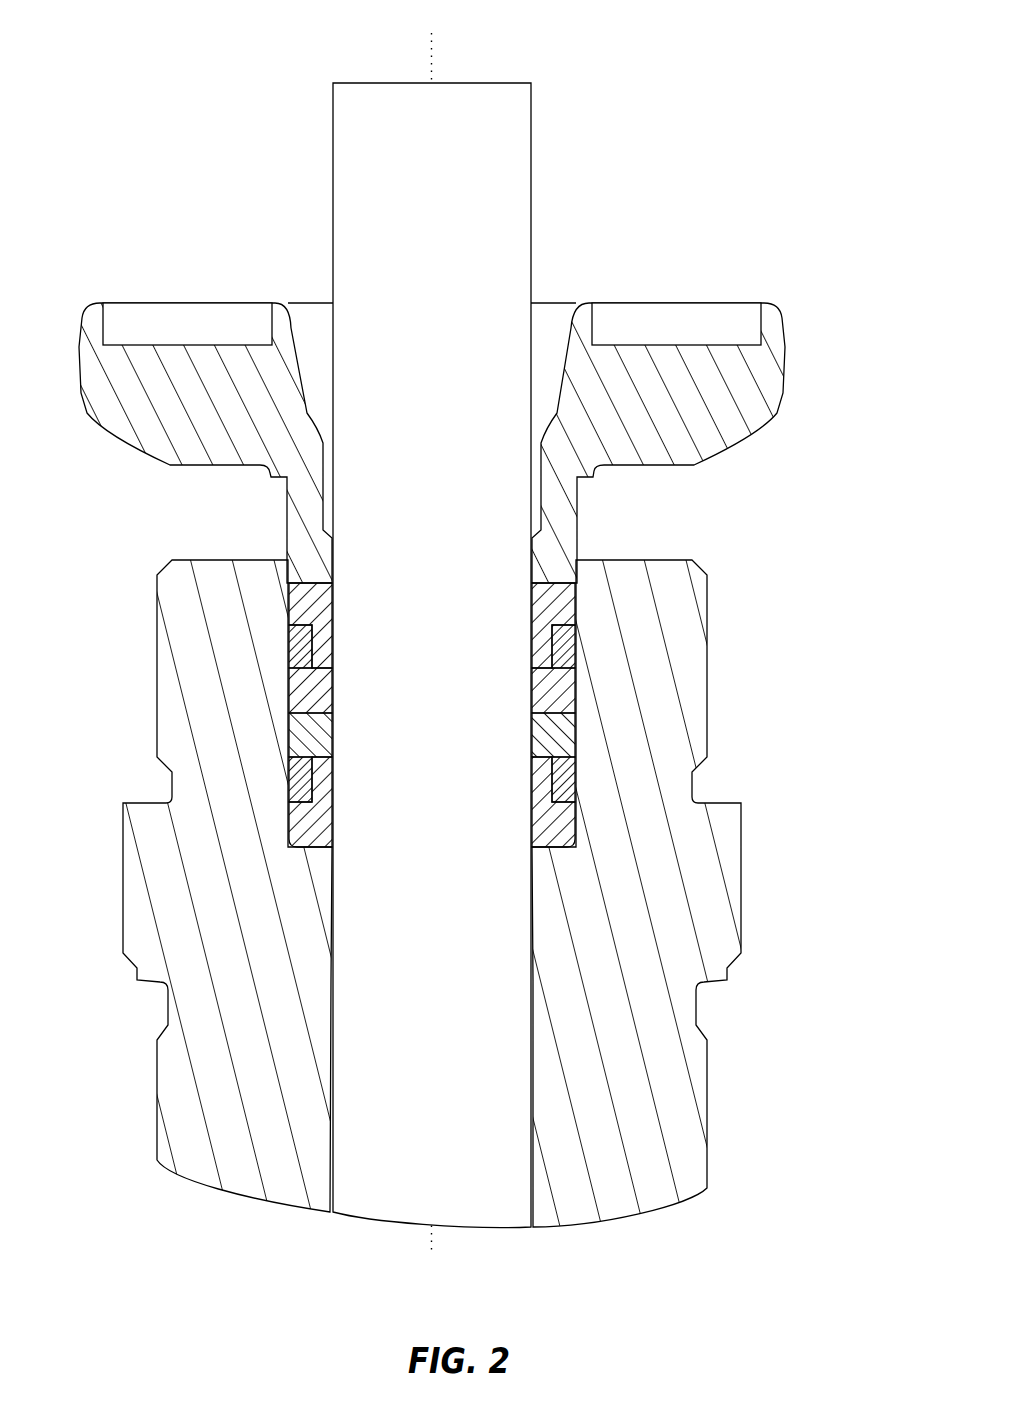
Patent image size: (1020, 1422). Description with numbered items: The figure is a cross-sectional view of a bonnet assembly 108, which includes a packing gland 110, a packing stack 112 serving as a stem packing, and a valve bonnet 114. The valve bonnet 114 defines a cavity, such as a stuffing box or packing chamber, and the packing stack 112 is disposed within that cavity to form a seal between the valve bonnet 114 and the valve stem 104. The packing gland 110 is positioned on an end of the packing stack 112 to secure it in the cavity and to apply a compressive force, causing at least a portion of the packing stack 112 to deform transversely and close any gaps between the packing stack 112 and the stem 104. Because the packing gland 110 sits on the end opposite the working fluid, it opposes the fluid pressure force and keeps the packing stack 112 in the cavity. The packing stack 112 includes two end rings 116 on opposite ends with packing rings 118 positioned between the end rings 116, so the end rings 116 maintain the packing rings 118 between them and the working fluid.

The valve stem 104 is at (464, 117).
The bonnet assembly 108 is at (463, 622).
The packing gland 110 is at (712, 413).
The packing stack 112 is at (429, 706).
The valve bonnet 114 is at (630, 1087).
The end ring 116 is at (590, 637).
The packing ring 118 is at (553, 702).